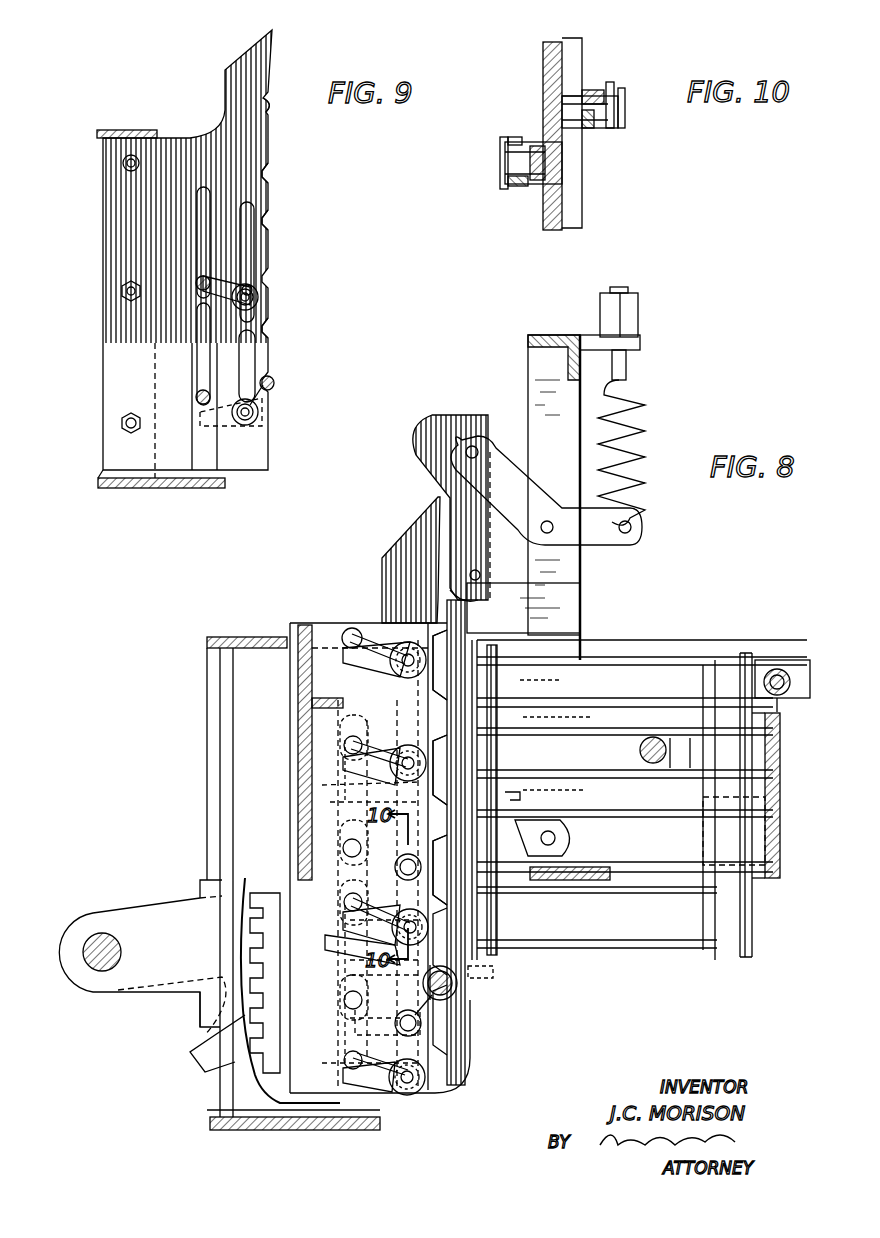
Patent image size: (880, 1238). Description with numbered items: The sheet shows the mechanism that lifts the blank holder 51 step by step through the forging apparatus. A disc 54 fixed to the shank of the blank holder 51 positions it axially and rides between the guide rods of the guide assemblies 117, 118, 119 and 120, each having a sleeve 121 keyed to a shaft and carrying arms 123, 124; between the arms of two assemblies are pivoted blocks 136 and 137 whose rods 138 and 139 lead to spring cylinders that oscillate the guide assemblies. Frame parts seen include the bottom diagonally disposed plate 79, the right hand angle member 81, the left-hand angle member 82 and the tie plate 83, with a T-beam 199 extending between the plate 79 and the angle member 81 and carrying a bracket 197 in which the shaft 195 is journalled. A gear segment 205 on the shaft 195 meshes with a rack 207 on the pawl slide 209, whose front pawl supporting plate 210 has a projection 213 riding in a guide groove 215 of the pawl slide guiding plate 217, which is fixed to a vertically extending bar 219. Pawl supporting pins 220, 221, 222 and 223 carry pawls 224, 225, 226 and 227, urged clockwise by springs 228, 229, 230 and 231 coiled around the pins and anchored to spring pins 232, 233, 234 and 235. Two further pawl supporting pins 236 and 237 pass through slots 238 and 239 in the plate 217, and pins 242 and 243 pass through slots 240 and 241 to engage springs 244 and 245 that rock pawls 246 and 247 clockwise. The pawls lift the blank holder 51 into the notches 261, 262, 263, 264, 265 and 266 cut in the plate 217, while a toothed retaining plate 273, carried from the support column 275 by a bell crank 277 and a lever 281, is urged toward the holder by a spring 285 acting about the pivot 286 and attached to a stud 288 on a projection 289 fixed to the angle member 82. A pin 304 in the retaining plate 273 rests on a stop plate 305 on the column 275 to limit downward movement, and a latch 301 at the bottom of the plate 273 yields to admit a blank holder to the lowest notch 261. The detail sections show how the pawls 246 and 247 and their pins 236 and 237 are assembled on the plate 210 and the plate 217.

In FIG. 9, the blank holder 51 is at (274, 382).
In FIG. 8, the blank holder 51 is at (452, 995).
In FIG. 8, the disc 54 is at (452, 984).
In FIG. 9, the bottom diagonally disposed plate 79 is at (124, 488).
In FIG. 8, the bottom diagonally disposed plate 79 is at (210, 1124).
In FIG. 9, the right hand angle member 81 is at (108, 130).
In FIG. 8, the right hand angle member 81 is at (230, 637).
In FIG. 8, the left-hand angle member 82 is at (572, 335).
In FIG. 8, the tie plate 83 is at (602, 867).
In FIG. 8, the guide assembly 117 is at (606, 658).
In FIG. 8, the guide assembly 118 is at (614, 720).
In FIG. 8, the guide assembly 119 is at (598, 802).
In FIG. 8, the guide assembly 120 is at (600, 968).
In FIG. 8, the sleeve 121 is at (732, 655).
In FIG. 8, the arm 123 is at (645, 655).
In FIG. 8, the arm 124 is at (592, 705).
In FIG. 8, the block 136 is at (790, 660).
In FIG. 8, the block 137 is at (660, 765).
In FIG. 8, the rod 138 is at (778, 700).
In FIG. 8, the rod 139 is at (640, 750).
In FIG. 8, the shaft 195 is at (103, 935).
In FIG. 8, the bracket 197 is at (185, 995).
In FIG. 8, the T-beam 199 is at (232, 667).
In FIG. 8, the gear segment 205 is at (252, 930).
In FIG. 8, the rack 207 is at (262, 943).
In FIG. 8, the pawl slide 209 is at (317, 612).
In FIG. 10, the front pawl supporting plate 210 is at (543, 220).
In FIG. 8, the projection 213 is at (298, 695).
In FIG. 9, the guide groove 215 is at (220, 455).
In FIG. 8, the guide groove 215 is at (378, 865).
In FIG. 9, the pawl slide guiding plate 217 is at (172, 150).
In FIG. 10, the pawl slide guiding plate 217 is at (570, 228).
In FIG. 8, the pawl slide guiding plate 217 is at (423, 791).
In FIG. 9, the vertically extending bar 219 is at (103, 470).
In FIG. 8, the pawl supporting pin 220 is at (410, 1095).
In FIG. 10, the pawl supporting pin 221 is at (502, 163).
In FIG. 8, the pawl supporting pin 221 is at (350, 962).
In FIG. 8, the pawl supporting pin 222 is at (408, 760).
In FIG. 8, the pawl supporting pin 223 is at (408, 678).
In FIG. 8, the pawl 224 is at (445, 1060).
In FIG. 10, the pawl 225 is at (538, 146).
In FIG. 8, the pawl 225 is at (350, 925).
In FIG. 8, the pawl 226 is at (345, 770).
In FIG. 8, the pawl 227 is at (365, 668).
In FIG. 10, the spring 228 is at (515, 186).
In FIG. 8, the spring 228 is at (345, 1066).
In FIG. 8, the spring 229 is at (345, 944).
In FIG. 8, the spring 230 is at (340, 722).
In FIG. 8, the spring 231 is at (356, 622).
In FIG. 8, the spring pin 232 is at (344, 1058).
In FIG. 10, the spring pin 233 is at (514, 137).
In FIG. 8, the spring pin 233 is at (345, 910).
In FIG. 8, the spring pin 234 is at (344, 745).
In FIG. 8, the spring pin 235 is at (330, 648).
In FIG. 9, the pawl supporting pin 236 is at (252, 424).
In FIG. 8, the pawl supporting pin 236 is at (440, 1045).
In FIG. 9, the pawl supporting pin 237 is at (232, 300).
In FIG. 10, the pawl supporting pin 237 is at (624, 108).
In FIG. 8, the pawl supporting pin 237 is at (400, 916).
In FIG. 9, the slot 238 is at (250, 350).
In FIG. 10, the slot 238 is at (588, 120).
In FIG. 8, the slot 238 is at (350, 978).
In FIG. 9, the slot 239 is at (248, 228).
In FIG. 10, the slot 239 is at (574, 60).
In FIG. 8, the slot 239 is at (322, 786).
In FIG. 9, the slot 240 is at (200, 375).
In FIG. 8, the slot 240 is at (344, 900).
In FIG. 9, the slot 241 is at (208, 200).
In FIG. 8, the slot 241 is at (330, 803).
In FIG. 9, the pin 242 is at (196, 398).
In FIG. 8, the pin 242 is at (344, 1000).
In FIG. 9, the pin 243 is at (208, 278).
In FIG. 8, the pin 243 is at (243, 862).
In FIG. 8, the spring 244 is at (350, 1018).
In FIG. 10, the spring 245 is at (611, 84).
In FIG. 8, the spring 245 is at (343, 846).
In FIG. 9, the pawl 246 is at (258, 412).
In FIG. 8, the pawl 246 is at (395, 1026).
In FIG. 9, the pawl 247 is at (252, 288).
In FIG. 10, the pawl 247 is at (590, 92).
In FIG. 8, the pawl 247 is at (395, 866).
In FIG. 9, the notch 261 is at (272, 388).
In FIG. 8, the notch 261 is at (445, 1000).
In FIG. 9, the notch 262 is at (266, 330).
In FIG. 8, the notch 262 is at (460, 895).
In FIG. 9, the notch 263 is at (258, 297).
In FIG. 8, the notch 263 is at (500, 822).
In FIG. 9, the notch 264 is at (266, 220).
In FIG. 8, the notch 264 is at (450, 757).
In FIG. 9, the notch 265 is at (266, 172).
In FIG. 8, the notch 265 is at (450, 700).
In FIG. 9, the notch 266 is at (272, 100).
In FIG. 8, the notch 266 is at (456, 600).
In FIG. 8, the retaining plate 273 is at (440, 425).
In FIG. 8, the support column 275 is at (530, 368).
In FIG. 8, the bell crank 277 is at (505, 482).
In FIG. 8, the lever 281 is at (512, 792).
In FIG. 8, the spring 285 is at (640, 398).
In FIG. 8, the pivot 286 is at (552, 520).
In FIG. 8, the stud 288 is at (628, 362).
In FIG. 8, the projection 289 is at (638, 342).
In FIG. 8, the latch 301 is at (494, 972).
In FIG. 8, the pin 304 is at (479, 572).
In FIG. 8, the stop plate 305 is at (560, 596).